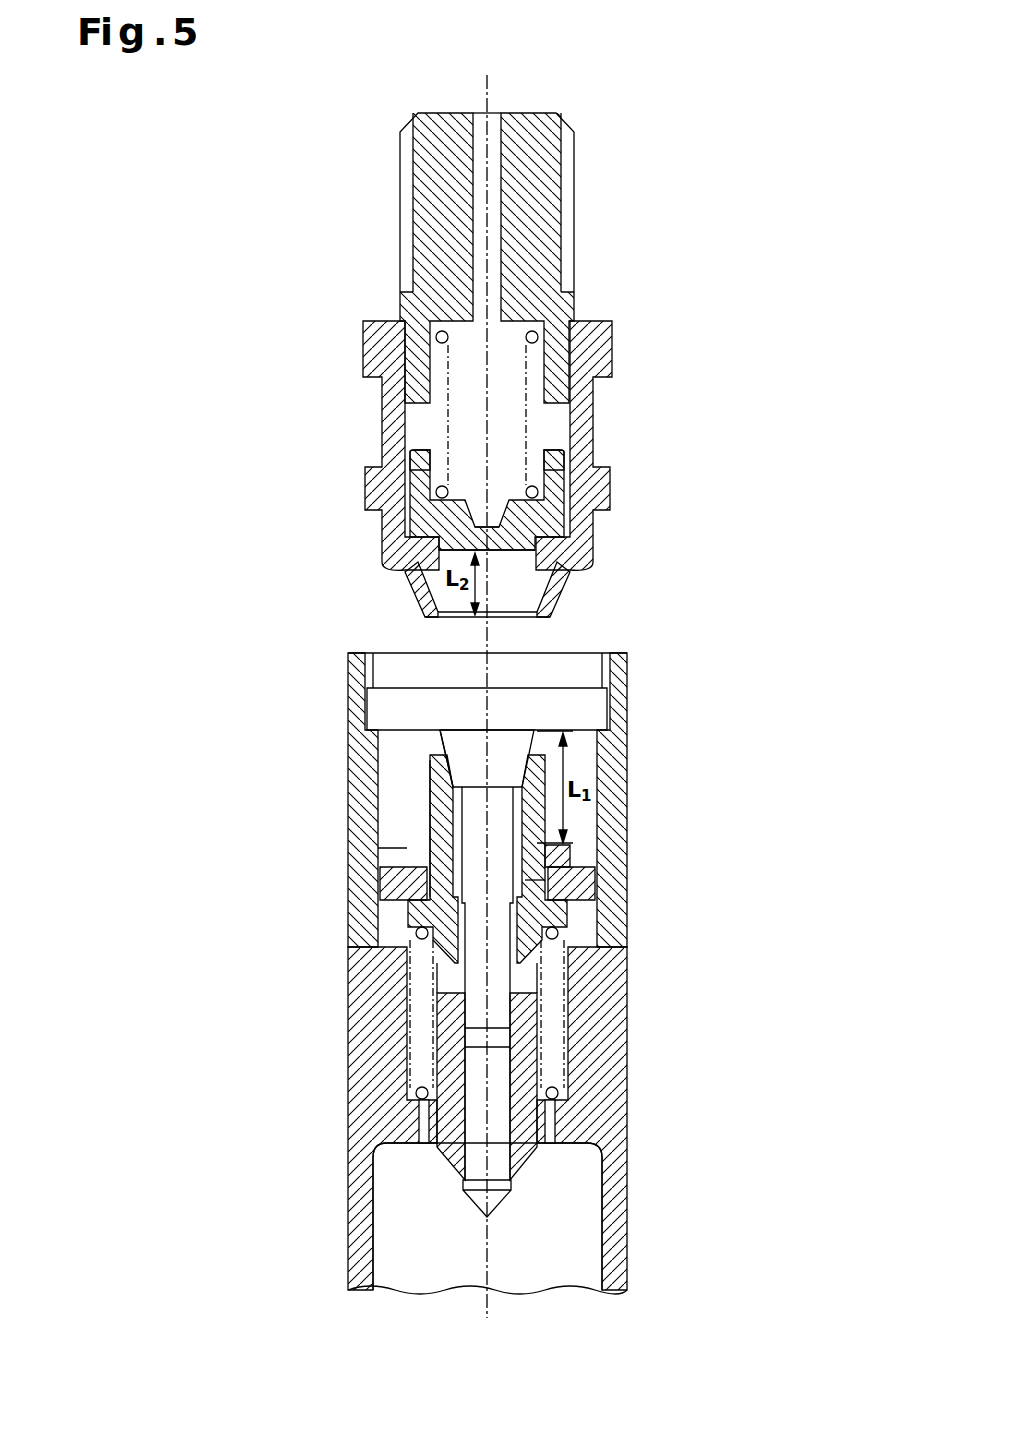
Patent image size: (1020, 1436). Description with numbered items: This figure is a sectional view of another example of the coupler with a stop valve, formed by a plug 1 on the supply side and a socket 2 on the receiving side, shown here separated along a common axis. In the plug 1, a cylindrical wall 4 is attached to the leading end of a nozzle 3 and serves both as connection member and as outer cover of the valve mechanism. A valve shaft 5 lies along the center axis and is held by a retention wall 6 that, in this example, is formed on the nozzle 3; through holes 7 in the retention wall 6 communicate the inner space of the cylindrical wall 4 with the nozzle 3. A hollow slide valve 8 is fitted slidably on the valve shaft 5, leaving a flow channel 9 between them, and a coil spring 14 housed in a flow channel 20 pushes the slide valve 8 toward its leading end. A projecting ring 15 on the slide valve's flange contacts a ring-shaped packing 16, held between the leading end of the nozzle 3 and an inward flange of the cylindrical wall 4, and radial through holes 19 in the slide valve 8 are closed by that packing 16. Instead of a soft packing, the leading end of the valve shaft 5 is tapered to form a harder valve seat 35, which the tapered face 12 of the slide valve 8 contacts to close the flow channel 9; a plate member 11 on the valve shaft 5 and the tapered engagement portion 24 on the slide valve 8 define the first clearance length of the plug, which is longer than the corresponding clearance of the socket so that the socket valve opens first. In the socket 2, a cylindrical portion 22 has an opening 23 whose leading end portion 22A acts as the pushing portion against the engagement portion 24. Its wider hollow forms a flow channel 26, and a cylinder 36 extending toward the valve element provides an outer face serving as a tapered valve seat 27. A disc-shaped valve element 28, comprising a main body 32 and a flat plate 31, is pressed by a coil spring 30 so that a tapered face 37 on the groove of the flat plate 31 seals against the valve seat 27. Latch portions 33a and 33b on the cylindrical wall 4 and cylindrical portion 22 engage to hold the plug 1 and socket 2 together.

The plug 1 is at (299, 979).
The socket 2 is at (623, 190).
The nozzle 3 is at (627, 1046).
The cylindrical wall 4 is at (354, 696).
The valve shaft 5 is at (497, 1145).
The retention wall 6 is at (604, 1168).
The through holes 7 is at (428, 1140).
The slide valve 8 is at (436, 794).
The flow channel 9 is at (433, 821).
The plate member 11 is at (465, 727).
The tapered face 12 is at (514, 729).
The coil spring 14 is at (426, 1045).
The projecting ring 15 is at (600, 911).
The packing 16 is at (405, 876).
The through holes 19 is at (533, 882).
The flow channel 20 is at (453, 977).
The cylindrical portion 22 is at (595, 393).
The leading end portion 22A is at (540, 617).
The opening 23 is at (440, 622).
The engagement portion 24 is at (569, 845).
The flow channel 26 is at (418, 428).
The valve seat 27 is at (545, 533).
The valve element 28 is at (530, 490).
The coil spring 30 is at (538, 335).
The flat plate 31 is at (504, 552).
The main body 32 is at (418, 458).
The latch portion 33a is at (354, 718).
The latch portion 33b is at (412, 466).
The valve seat 35 is at (436, 773).
The cylinder 36 is at (560, 583).
The tapered face 37 is at (423, 563).